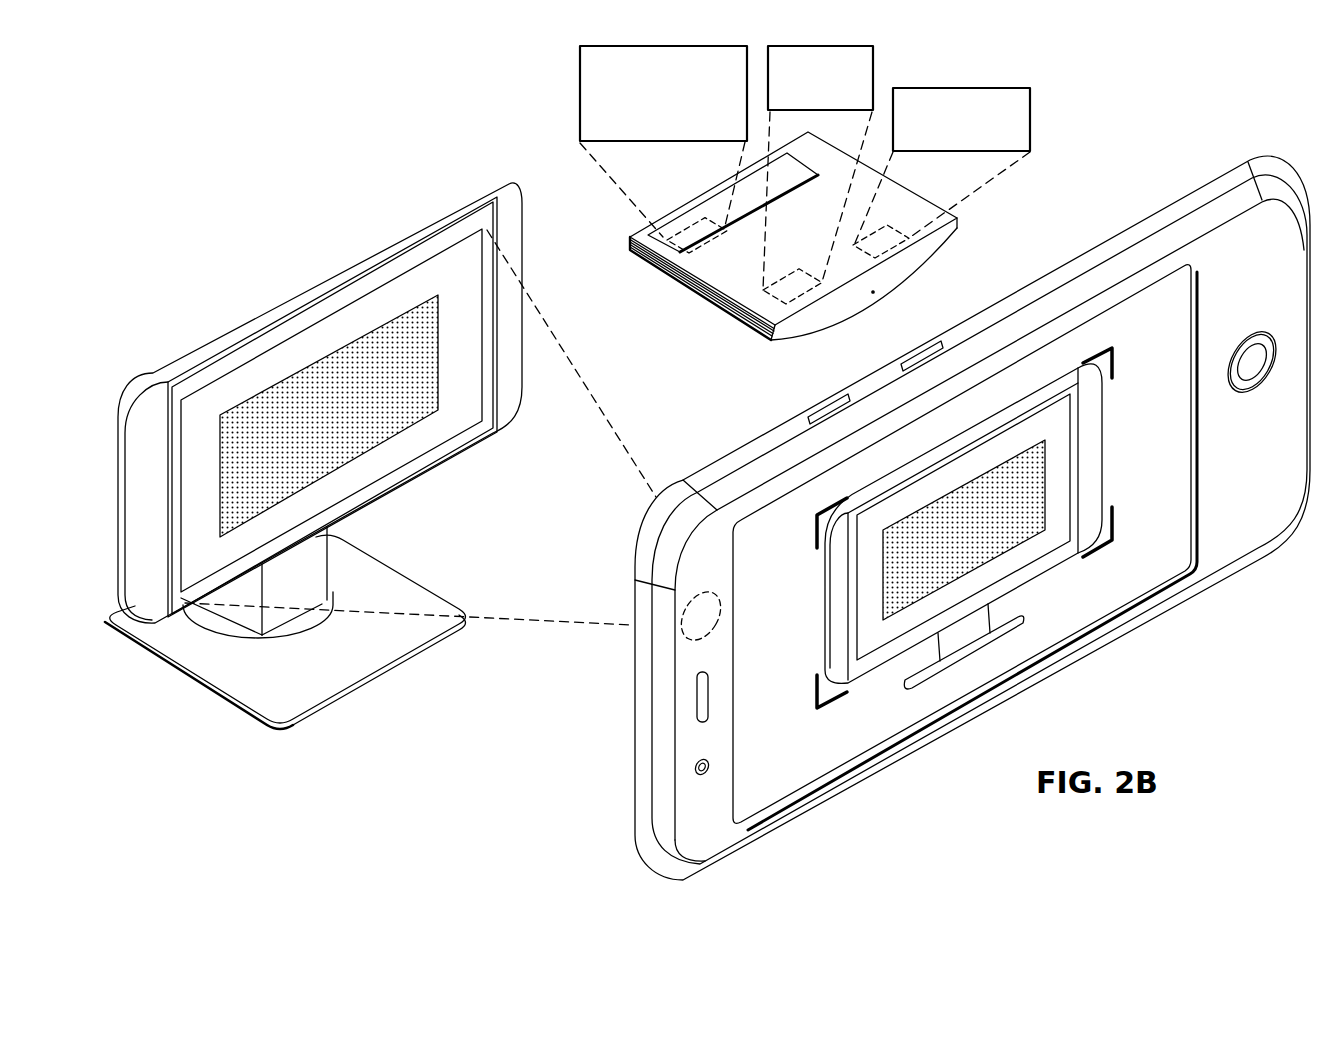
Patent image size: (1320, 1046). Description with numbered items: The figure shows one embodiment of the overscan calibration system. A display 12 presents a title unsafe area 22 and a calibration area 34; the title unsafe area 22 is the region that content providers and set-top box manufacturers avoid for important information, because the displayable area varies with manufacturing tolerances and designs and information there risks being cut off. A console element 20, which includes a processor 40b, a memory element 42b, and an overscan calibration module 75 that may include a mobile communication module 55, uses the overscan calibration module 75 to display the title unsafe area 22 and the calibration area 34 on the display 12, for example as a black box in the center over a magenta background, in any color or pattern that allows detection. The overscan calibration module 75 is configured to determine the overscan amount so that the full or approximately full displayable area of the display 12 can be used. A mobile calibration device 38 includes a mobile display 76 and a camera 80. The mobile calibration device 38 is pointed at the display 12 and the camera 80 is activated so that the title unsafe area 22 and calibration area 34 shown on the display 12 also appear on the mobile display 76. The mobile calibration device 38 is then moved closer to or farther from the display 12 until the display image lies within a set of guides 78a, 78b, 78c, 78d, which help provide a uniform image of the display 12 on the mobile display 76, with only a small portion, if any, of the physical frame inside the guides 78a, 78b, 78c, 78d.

The display 12 is at (627, 456).
The title unsafe area 22 is at (217, 393).
The calibration area 34 is at (313, 432).
The mobile communication module 55 is at (580, 92).
The memory element 42b is at (875, 73).
The processor 40b is at (975, 88).
The console element 20 is at (775, 226).
The overscan calibration module 75 is at (706, 250).
The mobile calibration device 38 is at (938, 476).
The mobile display 76 is at (1072, 610).
The guide 78a is at (814, 541).
The guide 78b is at (1114, 362).
The guide 78c is at (816, 697).
The guide 78d is at (1114, 522).
The camera 80 is at (693, 643).